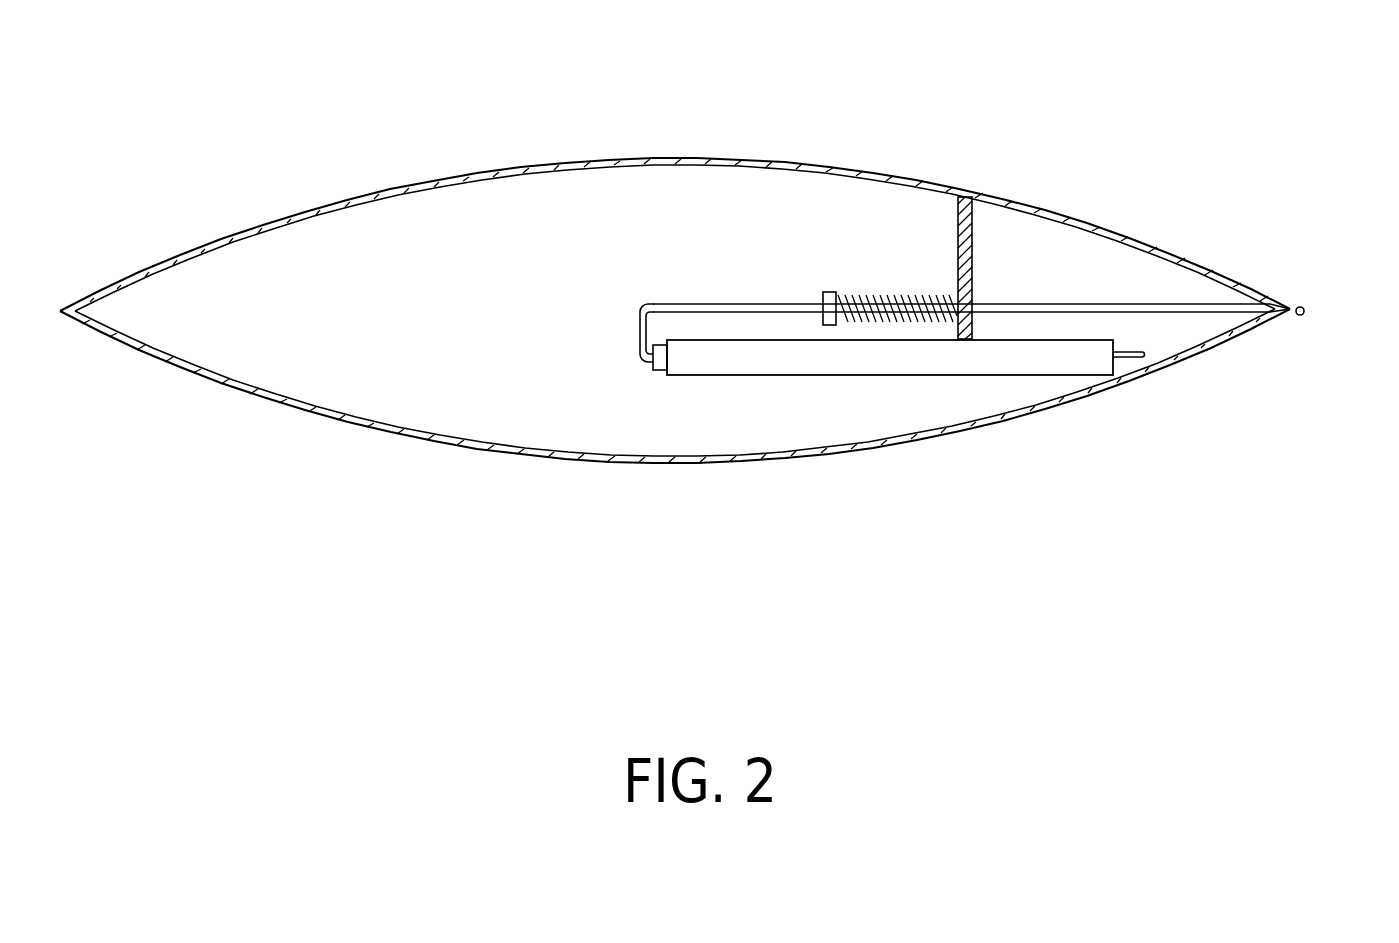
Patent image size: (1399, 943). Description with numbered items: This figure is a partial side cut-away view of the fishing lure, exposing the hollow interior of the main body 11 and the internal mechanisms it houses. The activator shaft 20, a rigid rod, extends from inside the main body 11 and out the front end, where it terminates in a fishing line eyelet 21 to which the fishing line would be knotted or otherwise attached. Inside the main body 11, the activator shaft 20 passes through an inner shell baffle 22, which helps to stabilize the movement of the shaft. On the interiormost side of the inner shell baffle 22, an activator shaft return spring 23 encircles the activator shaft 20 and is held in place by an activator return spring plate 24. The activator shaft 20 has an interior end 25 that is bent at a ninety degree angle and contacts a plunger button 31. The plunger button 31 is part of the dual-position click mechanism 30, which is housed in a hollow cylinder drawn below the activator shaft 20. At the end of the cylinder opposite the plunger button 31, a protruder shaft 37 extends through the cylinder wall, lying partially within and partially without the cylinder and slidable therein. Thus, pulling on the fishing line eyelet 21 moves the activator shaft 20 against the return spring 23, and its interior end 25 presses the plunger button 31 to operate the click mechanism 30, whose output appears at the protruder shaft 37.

The main body 11 is at (553, 165).
The activator shaft 20 is at (735, 303).
The fishing line eyelet 21 is at (1308, 311).
The inner shell baffle 22 is at (972, 258).
The activator shaft return spring 23 is at (880, 290).
The activator return spring plate 24 is at (829, 292).
The interior end 25 is at (628, 352).
The dual-position click mechanism 30 is at (849, 396).
The plunger button 31 is at (655, 375).
The protruder shaft 37 is at (1130, 360).